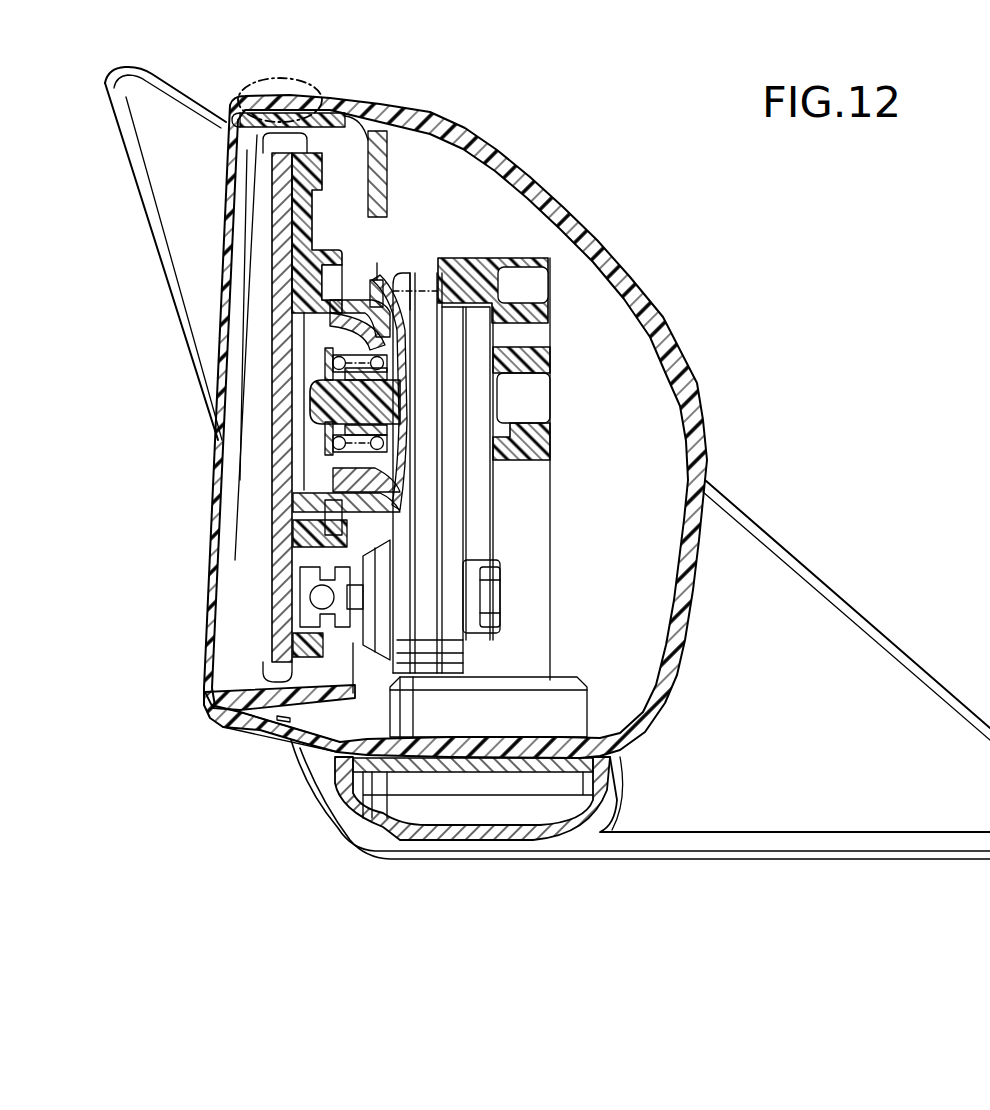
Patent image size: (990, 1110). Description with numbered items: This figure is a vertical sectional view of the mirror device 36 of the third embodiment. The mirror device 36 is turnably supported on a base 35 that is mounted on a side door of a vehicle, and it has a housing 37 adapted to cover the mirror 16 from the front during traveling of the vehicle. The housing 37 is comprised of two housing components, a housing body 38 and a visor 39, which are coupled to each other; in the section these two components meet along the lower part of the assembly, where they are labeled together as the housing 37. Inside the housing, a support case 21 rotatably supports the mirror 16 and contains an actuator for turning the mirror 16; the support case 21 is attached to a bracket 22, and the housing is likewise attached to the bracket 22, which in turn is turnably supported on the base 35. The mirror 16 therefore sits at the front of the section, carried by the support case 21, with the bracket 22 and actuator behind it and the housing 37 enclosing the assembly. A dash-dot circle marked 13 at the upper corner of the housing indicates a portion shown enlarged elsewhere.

The enlarged detail portion 13 is at (320, 82).
The mirror 16 is at (292, 553).
The support case 21 is at (450, 513).
The bracket 22 is at (487, 262).
The base 35 is at (862, 685).
The mirror device 36 is at (674, 323).
The housing 37 is at (290, 815).
The housing body 38 is at (322, 740).
The visor 39 is at (253, 722).